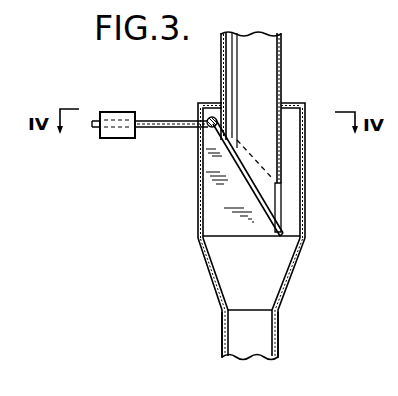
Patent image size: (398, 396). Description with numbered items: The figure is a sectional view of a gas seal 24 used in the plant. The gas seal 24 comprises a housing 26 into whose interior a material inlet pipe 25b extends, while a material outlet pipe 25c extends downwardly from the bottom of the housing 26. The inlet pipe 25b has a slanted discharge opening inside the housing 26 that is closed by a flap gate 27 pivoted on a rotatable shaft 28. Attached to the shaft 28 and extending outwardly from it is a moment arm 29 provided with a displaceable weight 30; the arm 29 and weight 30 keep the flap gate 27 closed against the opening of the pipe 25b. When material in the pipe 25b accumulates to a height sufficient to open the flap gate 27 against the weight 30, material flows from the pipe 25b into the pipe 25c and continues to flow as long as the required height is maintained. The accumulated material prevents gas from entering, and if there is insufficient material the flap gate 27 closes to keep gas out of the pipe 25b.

The gas seal 24 is at (199, 264).
The material inlet pipe 25b is at (282, 73).
The material outlet pipe 25c is at (280, 338).
The housing 26 is at (305, 216).
The flap gate 27 is at (233, 155).
The rotatable shaft 28 is at (208, 118).
The moment arm 29 is at (172, 129).
The displaceable weight 30 is at (117, 112).